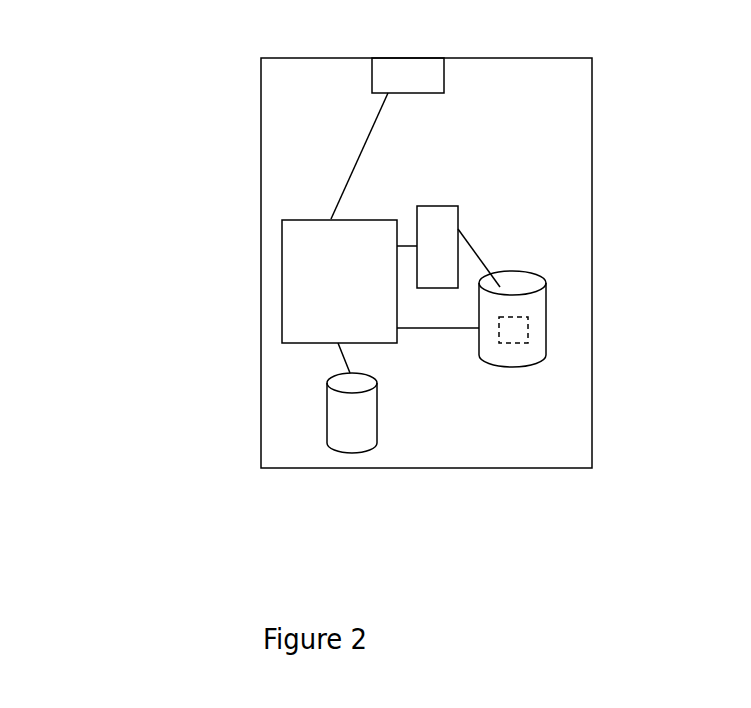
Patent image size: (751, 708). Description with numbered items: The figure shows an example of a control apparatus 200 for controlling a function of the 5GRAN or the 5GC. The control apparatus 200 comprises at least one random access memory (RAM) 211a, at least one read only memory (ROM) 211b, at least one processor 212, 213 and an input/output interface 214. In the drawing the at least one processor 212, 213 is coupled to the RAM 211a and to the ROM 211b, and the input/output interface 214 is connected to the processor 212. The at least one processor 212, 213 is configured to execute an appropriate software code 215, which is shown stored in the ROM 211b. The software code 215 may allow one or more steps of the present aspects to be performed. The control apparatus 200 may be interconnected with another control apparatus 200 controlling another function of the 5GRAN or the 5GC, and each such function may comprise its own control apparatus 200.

The control apparatus 200 is at (244, 53).
The input/output interface 214 is at (413, 77).
The processor 213 is at (427, 227).
The processor 212 is at (282, 309).
The random access memory (RAM) 211a is at (327, 410).
The read only memory (ROM) 211b is at (546, 345).
The software code 215 is at (527, 319).